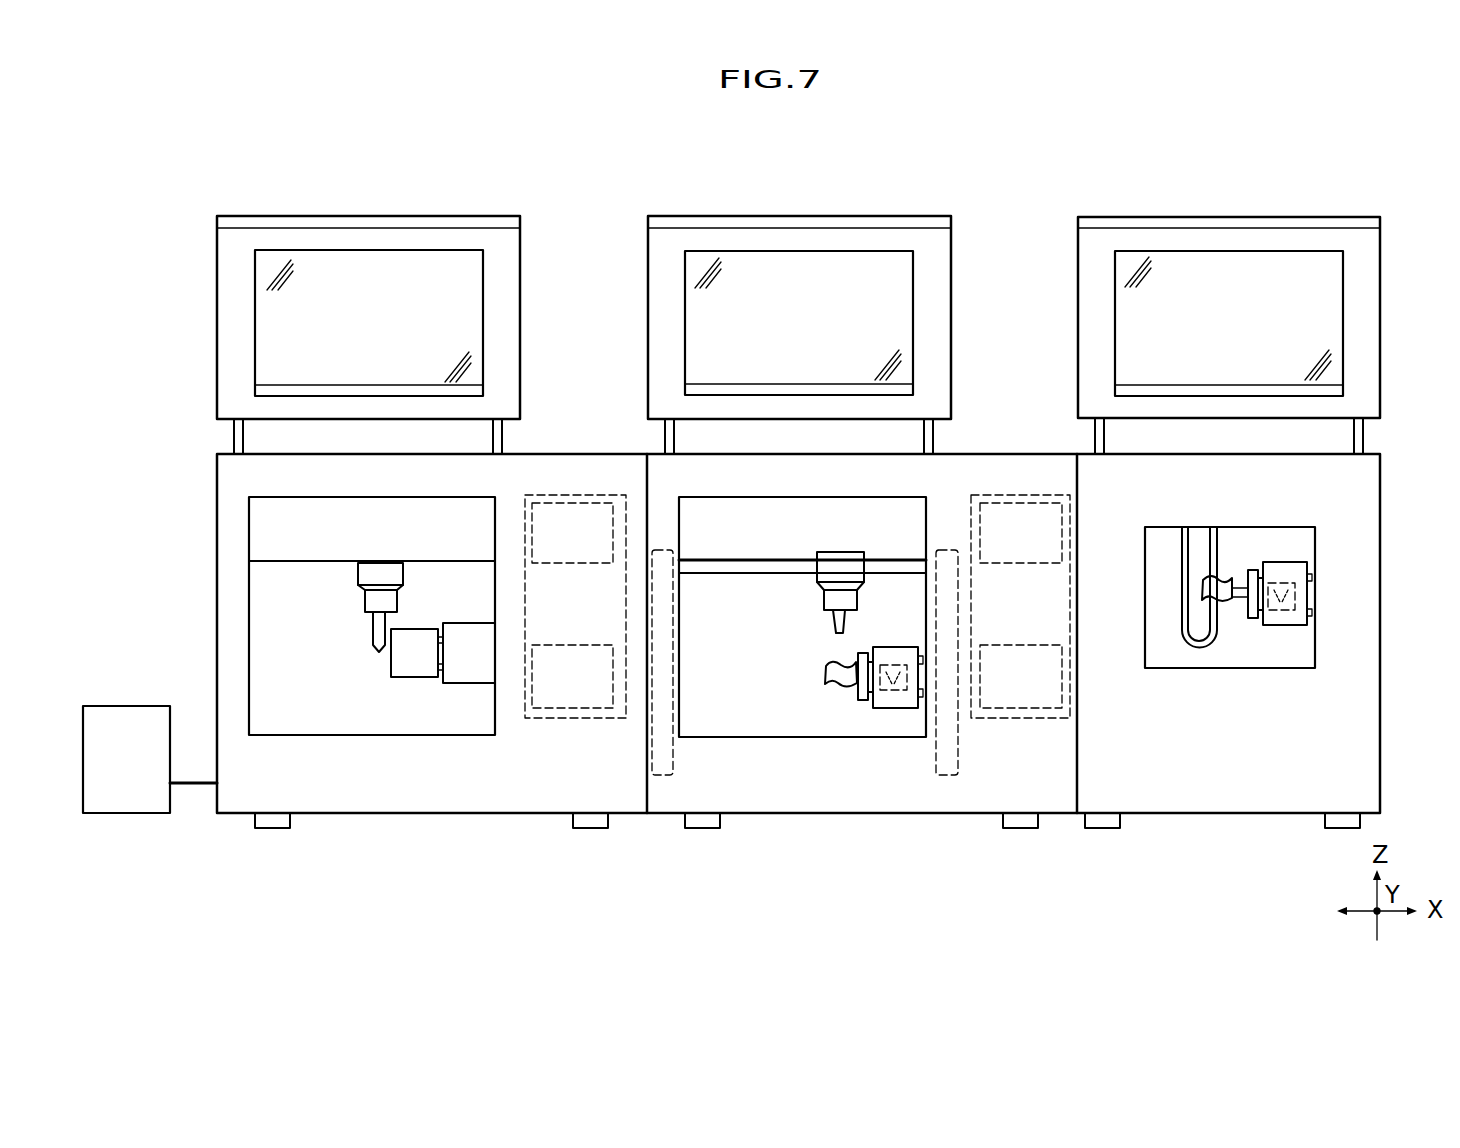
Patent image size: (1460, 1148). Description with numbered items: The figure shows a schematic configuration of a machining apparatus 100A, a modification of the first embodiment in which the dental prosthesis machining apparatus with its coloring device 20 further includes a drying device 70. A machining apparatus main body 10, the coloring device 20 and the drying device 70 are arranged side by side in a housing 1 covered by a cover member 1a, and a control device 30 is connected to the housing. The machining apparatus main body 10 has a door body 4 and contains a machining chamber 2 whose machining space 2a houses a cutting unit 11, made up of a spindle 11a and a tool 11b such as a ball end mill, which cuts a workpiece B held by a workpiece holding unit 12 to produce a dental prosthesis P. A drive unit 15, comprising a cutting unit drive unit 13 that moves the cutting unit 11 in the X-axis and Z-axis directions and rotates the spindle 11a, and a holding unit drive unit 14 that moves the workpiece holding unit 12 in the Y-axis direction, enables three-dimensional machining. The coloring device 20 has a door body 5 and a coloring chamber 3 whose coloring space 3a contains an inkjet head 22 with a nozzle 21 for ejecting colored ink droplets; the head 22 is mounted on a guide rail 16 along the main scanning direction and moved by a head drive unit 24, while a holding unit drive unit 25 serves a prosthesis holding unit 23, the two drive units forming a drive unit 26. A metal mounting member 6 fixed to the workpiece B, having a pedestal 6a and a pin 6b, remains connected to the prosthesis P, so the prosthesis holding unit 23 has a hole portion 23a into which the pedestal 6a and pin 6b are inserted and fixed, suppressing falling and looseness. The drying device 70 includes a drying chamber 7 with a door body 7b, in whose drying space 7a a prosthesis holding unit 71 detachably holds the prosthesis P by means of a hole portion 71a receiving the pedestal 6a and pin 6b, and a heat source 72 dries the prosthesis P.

The machining apparatus 100A is at (1040, 126).
The housing 1 is at (990, 815).
The cover member 1a is at (1078, 745).
The machining apparatus main body 10 is at (377, 206).
The coloring device 20 is at (803, 209).
The drying device 70 is at (1283, 209).
The door body 4 is at (217, 295).
The door body 5 is at (952, 295).
The door body 7b is at (1382, 312).
The machining chamber 2 is at (272, 615).
The machining space 2a is at (375, 721).
The cutting unit 11 is at (358, 572).
The spindle 11a is at (365, 600).
The tool 11b is at (375, 640).
The workpiece B is at (413, 677).
The workpiece holding unit 12 is at (468, 683).
The cutting unit drive unit 13 is at (572, 533).
The holding unit drive unit 14 is at (568, 683).
The drive unit 15 is at (615, 718).
The coloring chamber 3 is at (890, 527).
The coloring space 3a is at (745, 702).
The guide rail 16 is at (707, 565).
The inkjet head 22 is at (827, 565).
The nozzle 21 is at (830, 620).
The prosthesis P is at (822, 673).
The mounting member 6 is at (885, 868).
The pedestal 6a is at (862, 702).
The pin 6b is at (880, 710).
The prosthesis holding unit 23 is at (913, 708).
The hole portion 23a is at (903, 690).
The head drive unit 24 is at (1020, 540).
The holding unit drive unit 25 is at (1025, 690).
The drive unit 26 is at (1057, 718).
The drying chamber 7 is at (1292, 547).
The drying space 7a is at (1255, 554).
The heat source 72 is at (1182, 565).
The prosthesis holding unit 71 is at (1308, 627).
The hole portion 71a is at (1292, 627).
The control device 30 is at (132, 705).